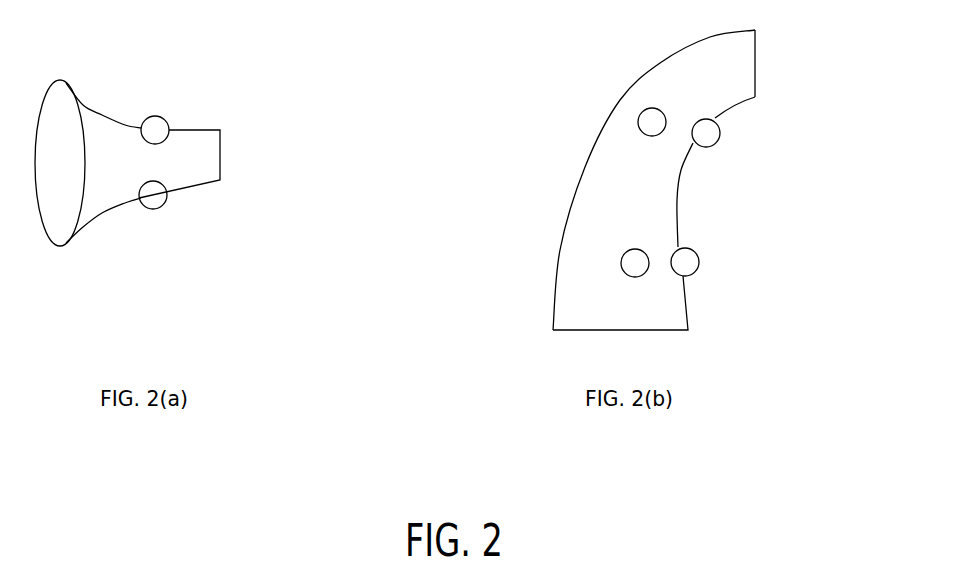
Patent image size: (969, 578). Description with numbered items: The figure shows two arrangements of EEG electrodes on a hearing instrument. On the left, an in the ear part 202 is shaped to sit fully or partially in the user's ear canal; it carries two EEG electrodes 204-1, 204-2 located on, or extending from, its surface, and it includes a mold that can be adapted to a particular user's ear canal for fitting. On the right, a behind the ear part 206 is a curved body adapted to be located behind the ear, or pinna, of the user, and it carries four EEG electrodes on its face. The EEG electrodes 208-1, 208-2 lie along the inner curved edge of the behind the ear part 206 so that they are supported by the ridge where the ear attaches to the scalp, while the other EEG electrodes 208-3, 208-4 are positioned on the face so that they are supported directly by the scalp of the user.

In FIG. 2A, the in the ear part 202 is at (102, 113).
In FIG. 2A, the EEG electrode 204-1 is at (166, 122).
In FIG. 2A, the EEG electrode 204-2 is at (164, 204).
In FIG. 2B, the behind the ear part 206 is at (757, 58).
In FIG. 2B, the EEG electrode 208-1 is at (717, 143).
In FIG. 2B, the EEG electrode 208-2 is at (697, 270).
In FIG. 2B, the EEG electrode 208-3 is at (647, 107).
In FIG. 2B, the EEG electrode 208-4 is at (628, 249).